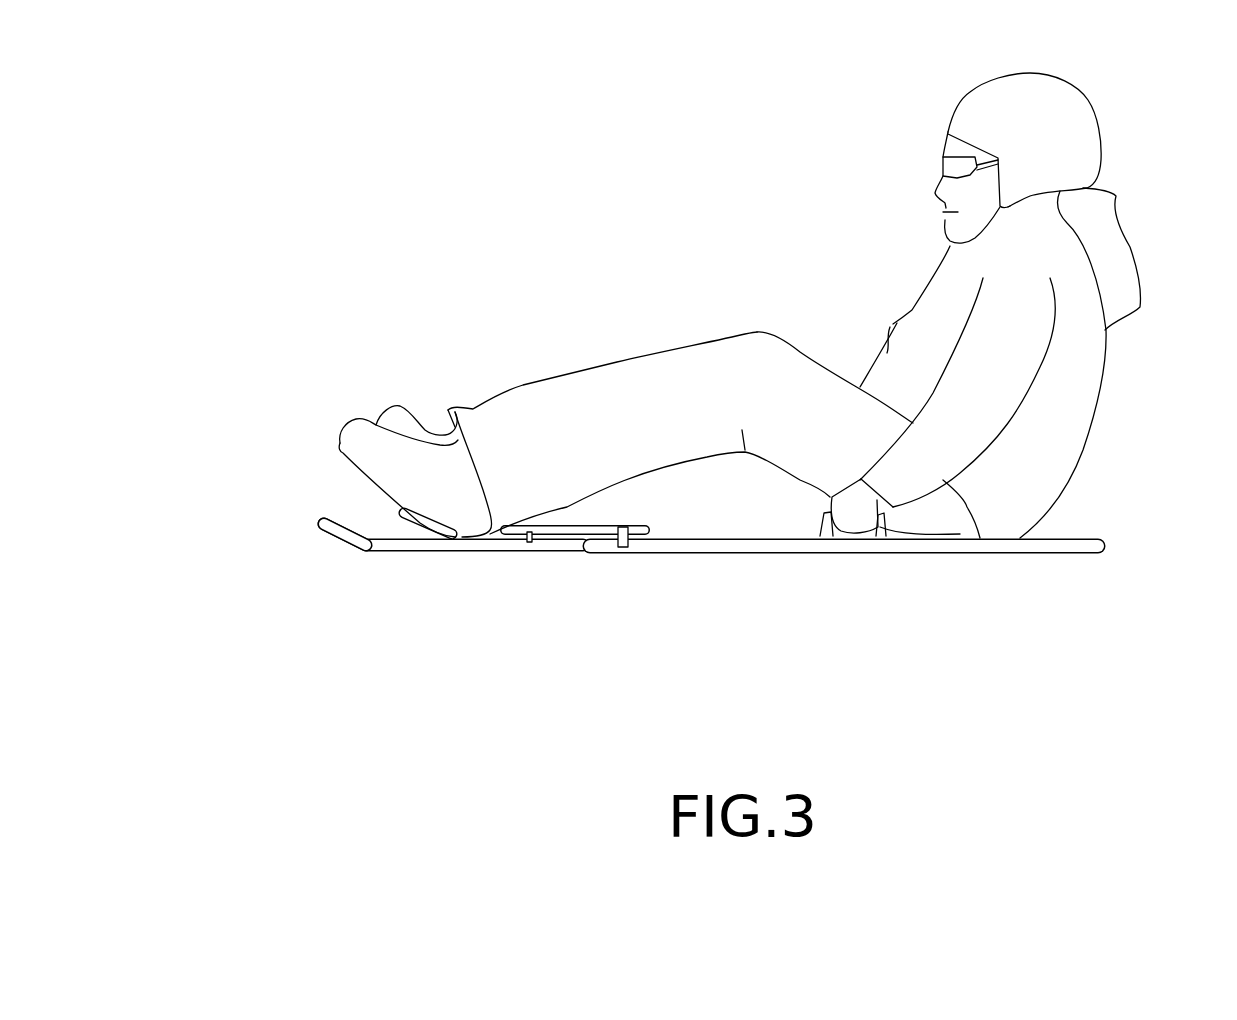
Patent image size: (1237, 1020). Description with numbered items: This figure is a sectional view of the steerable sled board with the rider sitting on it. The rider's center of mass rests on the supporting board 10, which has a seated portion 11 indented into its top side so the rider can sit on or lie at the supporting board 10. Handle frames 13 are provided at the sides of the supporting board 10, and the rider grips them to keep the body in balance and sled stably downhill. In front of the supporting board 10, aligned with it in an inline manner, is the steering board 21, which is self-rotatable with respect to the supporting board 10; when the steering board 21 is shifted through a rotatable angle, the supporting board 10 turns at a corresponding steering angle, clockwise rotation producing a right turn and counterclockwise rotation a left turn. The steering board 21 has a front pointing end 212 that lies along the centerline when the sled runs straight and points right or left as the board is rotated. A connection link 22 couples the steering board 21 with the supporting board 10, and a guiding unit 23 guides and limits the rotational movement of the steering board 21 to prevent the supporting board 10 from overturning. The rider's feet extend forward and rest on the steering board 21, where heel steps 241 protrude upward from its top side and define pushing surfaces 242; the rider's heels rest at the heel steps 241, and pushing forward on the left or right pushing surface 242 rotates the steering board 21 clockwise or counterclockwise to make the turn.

The supporting board 10 is at (713, 545).
The seated portion 11 is at (1060, 518).
The handle frames 13 is at (883, 524).
The steering board 21 is at (385, 547).
The front pointing end 212 is at (305, 521).
The connection link 22 is at (600, 530).
The guiding unit 23 is at (519, 545).
The heel steps 241 is at (452, 532).
The pushing surfaces 242 is at (450, 538).